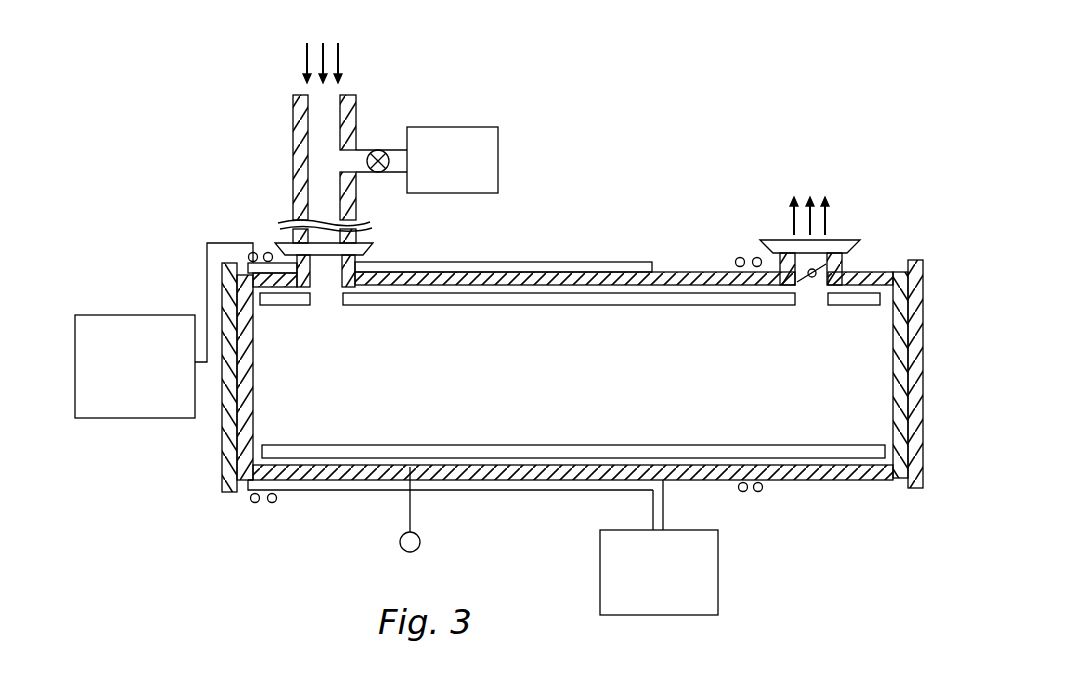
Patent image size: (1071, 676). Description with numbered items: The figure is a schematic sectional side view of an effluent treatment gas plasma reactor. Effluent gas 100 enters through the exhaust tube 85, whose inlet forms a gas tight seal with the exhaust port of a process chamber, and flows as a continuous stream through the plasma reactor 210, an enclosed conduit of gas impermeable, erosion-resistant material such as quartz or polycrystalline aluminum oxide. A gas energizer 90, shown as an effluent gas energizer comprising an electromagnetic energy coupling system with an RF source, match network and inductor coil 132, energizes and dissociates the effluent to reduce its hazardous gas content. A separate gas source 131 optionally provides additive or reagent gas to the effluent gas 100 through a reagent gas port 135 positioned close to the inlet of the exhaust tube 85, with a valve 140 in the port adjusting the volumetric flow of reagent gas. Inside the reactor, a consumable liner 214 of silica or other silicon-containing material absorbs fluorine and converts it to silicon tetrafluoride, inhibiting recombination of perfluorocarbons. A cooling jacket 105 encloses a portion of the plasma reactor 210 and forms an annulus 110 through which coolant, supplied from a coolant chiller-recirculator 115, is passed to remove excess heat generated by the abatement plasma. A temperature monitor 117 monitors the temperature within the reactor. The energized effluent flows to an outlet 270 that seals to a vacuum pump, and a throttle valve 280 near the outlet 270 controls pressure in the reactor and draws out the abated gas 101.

The exhaust tube 85 is at (293, 138).
The gas energizer 90 is at (141, 315).
The effluent gas 100 is at (340, 65).
The abated gas 101 is at (828, 223).
The cooling jacket 105 is at (503, 490).
The annulus 110 is at (506, 262).
The coolant chiller-recirculator 115 is at (600, 572).
The temperature monitor 117 is at (400, 545).
The gas source 131 is at (500, 162).
The inductor coil 132 is at (760, 492).
The reagent gas port 135 is at (401, 177).
The valve 140 is at (380, 150).
The plasma reactor 210 is at (560, 346).
The liner 214 is at (742, 306).
The outlet 270 is at (752, 251).
The throttle valve 280 is at (836, 270).